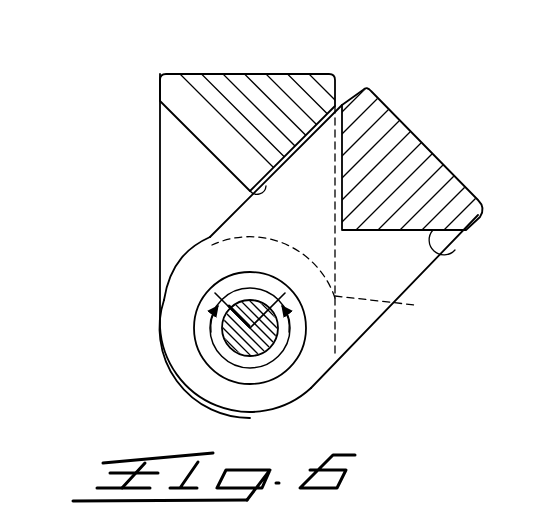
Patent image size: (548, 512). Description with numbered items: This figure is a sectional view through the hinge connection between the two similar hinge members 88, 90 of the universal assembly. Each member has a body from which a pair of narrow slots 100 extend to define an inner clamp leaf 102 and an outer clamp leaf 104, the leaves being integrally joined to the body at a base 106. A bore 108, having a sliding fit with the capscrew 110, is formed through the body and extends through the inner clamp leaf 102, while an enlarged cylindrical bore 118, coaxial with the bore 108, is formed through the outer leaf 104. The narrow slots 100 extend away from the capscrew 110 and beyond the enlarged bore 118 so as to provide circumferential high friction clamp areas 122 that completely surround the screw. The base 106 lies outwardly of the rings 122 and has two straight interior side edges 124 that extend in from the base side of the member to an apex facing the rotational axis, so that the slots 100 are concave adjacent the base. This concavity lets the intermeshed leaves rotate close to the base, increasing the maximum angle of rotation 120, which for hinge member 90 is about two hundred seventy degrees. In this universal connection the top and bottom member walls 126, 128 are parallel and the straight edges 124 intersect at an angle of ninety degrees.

The hinge member 88 is at (158, 82).
The hinge member 90 is at (400, 109).
The narrow slots 100 is at (182, 143).
The inner clamp leaf 102 is at (160, 222).
The outer clamp leaf 104 is at (383, 320).
The base 106 is at (243, 88).
The bore 108 is at (237, 350).
The capscrew 110 is at (254, 300).
The enlarged cylindrical bore 118 is at (203, 326).
The angle of rotation 120 is at (284, 376).
The circumferential high friction clamp areas 122 is at (175, 300).
The straight interior side edges 124 is at (250, 191).
The top member wall 126 is at (160, 191).
The bottom member wall 128 is at (416, 305).